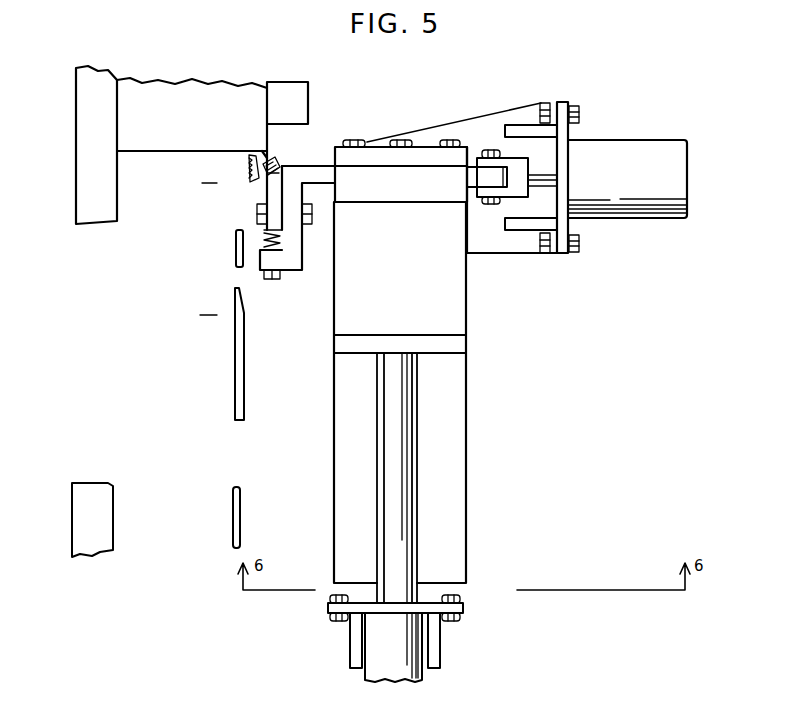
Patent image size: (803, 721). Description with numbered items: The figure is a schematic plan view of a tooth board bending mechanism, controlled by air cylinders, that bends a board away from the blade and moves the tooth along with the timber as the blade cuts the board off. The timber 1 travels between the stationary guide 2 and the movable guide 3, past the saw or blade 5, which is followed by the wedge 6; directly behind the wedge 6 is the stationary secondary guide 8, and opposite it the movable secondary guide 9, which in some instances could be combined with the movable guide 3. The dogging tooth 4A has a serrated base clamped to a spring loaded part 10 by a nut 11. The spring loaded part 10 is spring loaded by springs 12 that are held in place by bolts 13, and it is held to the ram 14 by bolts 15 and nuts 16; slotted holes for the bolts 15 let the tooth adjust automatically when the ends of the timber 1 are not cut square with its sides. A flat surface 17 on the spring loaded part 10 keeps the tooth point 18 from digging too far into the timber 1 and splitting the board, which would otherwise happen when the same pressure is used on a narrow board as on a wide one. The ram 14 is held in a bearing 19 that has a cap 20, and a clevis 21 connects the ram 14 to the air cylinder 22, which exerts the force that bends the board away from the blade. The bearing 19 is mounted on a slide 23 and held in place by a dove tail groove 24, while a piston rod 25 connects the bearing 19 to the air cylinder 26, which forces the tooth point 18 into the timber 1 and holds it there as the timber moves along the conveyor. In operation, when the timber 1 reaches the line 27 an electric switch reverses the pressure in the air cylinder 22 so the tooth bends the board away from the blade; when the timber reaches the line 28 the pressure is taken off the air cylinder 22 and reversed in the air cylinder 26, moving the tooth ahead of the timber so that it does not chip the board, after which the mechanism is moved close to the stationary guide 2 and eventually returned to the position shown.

The timber 1 is at (135, 156).
The stationary guide 2 is at (312, 90).
The movable guide 3 is at (120, 193).
The dogging tooth 4A is at (244, 167).
The saw or blade 5 is at (228, 247).
The wedge 6 is at (228, 348).
The stationary secondary guide 8 is at (228, 520).
The movable secondary guide 9 is at (65, 515).
The spring loaded part 10 is at (261, 193).
The nut 11 is at (276, 163).
The springs 12 is at (255, 250).
The bolts 13 is at (283, 277).
The ram 14 is at (325, 161).
The bolts 15 is at (253, 213).
The nuts 16 is at (307, 234).
The flat surface 17 is at (263, 160).
The tooth point 18 is at (245, 148).
The bearing 19 is at (343, 207).
The cap 20 is at (373, 172).
The clevis 21 is at (505, 197).
The air cylinder 22 is at (590, 225).
The slide 23 is at (473, 378).
The dove tail groove 24 is at (424, 467).
The piston rod 25 is at (415, 593).
The air cylinder 26 is at (425, 678).
The line 27 is at (199, 185).
The line 28 is at (190, 315).